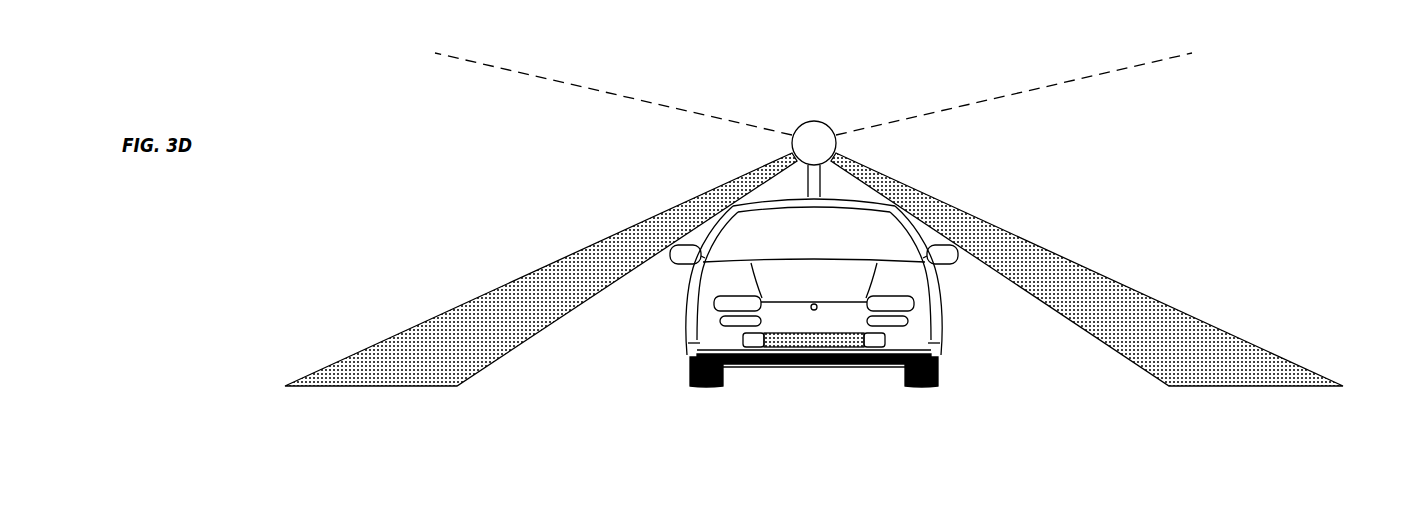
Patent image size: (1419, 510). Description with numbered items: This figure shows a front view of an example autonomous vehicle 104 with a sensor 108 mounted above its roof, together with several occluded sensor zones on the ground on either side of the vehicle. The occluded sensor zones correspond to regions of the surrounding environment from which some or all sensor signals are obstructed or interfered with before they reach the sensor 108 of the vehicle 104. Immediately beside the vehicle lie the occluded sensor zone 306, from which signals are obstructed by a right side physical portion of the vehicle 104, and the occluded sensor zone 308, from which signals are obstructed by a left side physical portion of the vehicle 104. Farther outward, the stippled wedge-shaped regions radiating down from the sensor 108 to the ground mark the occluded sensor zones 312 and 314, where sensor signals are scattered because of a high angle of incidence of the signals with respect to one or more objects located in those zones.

The vehicle 104 is at (798, 340).
The sensor 108 is at (820, 132).
The occluded sensor zone 306 is at (686, 388).
The occluded sensor zone 308 is at (1166, 388).
The occluded sensor zone 312 is at (456, 388).
The occluded sensor zone 314 is at (1343, 388).